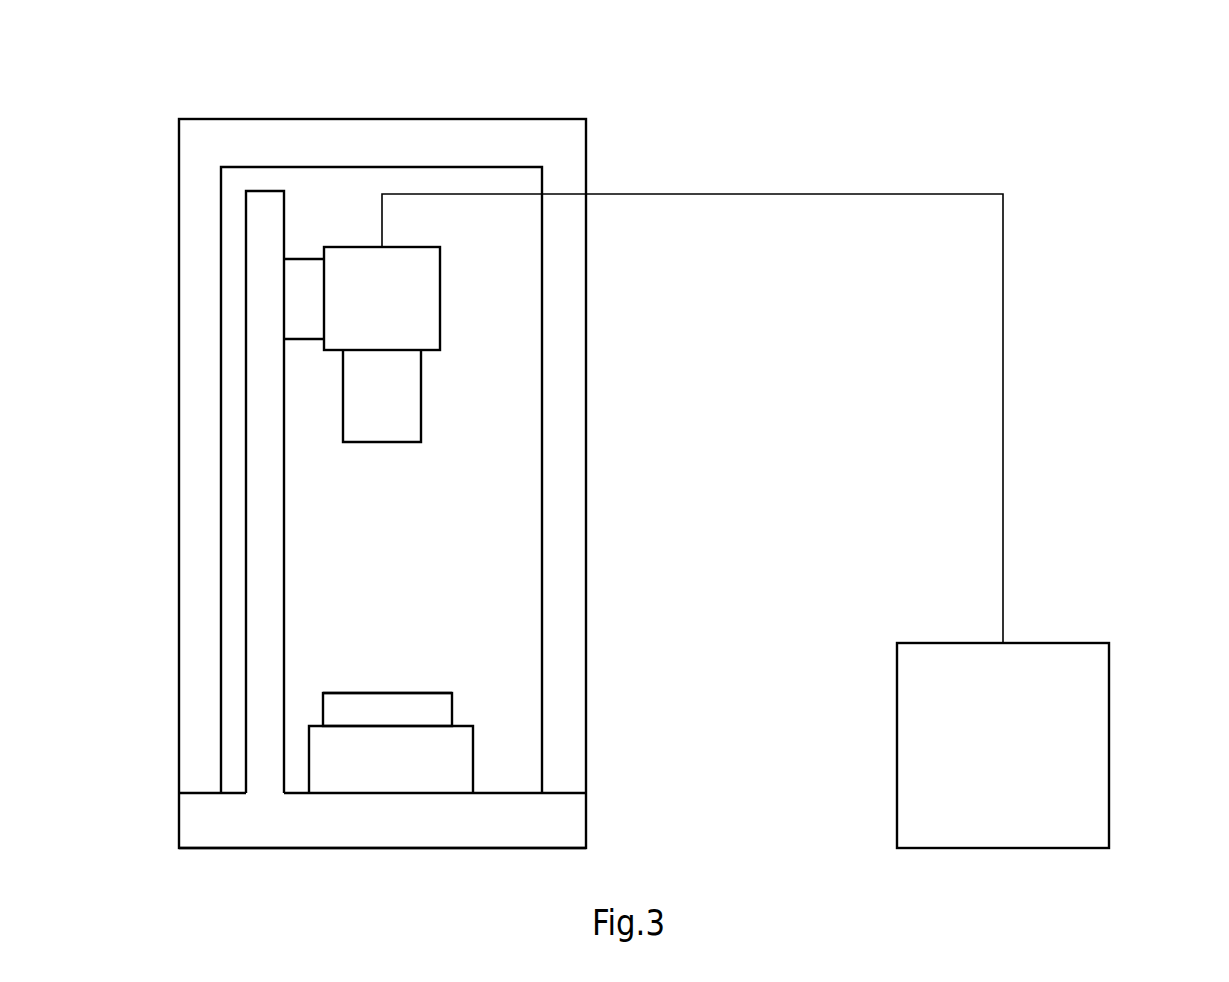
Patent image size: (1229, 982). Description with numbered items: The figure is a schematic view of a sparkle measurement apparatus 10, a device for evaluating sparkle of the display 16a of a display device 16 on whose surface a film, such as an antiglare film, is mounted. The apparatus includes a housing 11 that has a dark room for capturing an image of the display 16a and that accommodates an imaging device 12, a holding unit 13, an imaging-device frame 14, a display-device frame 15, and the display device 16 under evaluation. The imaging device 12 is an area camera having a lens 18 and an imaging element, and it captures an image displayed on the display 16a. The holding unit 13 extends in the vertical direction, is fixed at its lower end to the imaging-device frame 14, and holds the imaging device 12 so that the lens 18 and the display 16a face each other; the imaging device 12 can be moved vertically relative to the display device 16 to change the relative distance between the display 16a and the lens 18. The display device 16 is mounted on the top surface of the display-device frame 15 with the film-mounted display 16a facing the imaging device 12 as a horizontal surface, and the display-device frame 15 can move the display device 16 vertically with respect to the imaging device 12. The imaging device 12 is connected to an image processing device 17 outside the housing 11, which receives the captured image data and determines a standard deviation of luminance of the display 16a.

The sparkle measurement apparatus 10 is at (1097, 48).
The housing 11 is at (179, 355).
The imaging device 12 is at (440, 292).
The holding unit 13 is at (247, 498).
The imaging-device frame 14 is at (207, 825).
The display-device frame 15 is at (473, 760).
The display device 16 is at (452, 705).
The display 16a is at (420, 690).
The image processing device 17 is at (1110, 740).
The lens 18 is at (421, 394).